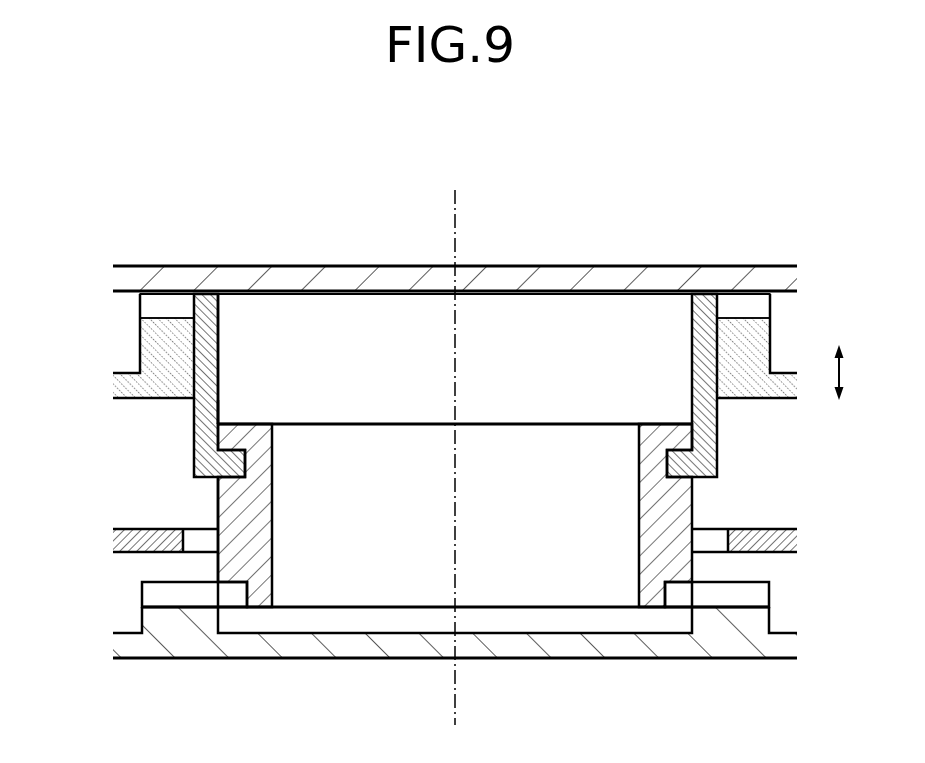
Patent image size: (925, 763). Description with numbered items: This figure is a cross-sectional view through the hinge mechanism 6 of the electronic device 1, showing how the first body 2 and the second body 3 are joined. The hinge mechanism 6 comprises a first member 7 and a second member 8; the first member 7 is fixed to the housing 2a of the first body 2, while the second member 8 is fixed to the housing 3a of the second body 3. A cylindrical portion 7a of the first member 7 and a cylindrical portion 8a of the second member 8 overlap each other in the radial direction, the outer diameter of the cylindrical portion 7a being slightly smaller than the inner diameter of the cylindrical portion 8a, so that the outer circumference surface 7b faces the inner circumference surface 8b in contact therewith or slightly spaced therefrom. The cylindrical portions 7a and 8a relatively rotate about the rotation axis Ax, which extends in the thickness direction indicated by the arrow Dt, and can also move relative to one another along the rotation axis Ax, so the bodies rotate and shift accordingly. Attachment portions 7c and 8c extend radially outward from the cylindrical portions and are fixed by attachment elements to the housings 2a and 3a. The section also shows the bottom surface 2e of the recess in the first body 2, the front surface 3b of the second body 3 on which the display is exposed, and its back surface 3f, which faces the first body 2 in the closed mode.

The electronic device 1 is at (313, 170).
The first body 2 is at (784, 671).
The housing 2a is at (737, 650).
The bottom surface 2e is at (125, 528).
The second body 3 is at (784, 257).
The housing 3a is at (759, 390).
The front surface 3b is at (622, 266).
The back surface 3f is at (135, 405).
The hinge mechanism 6 is at (783, 478).
The first member 7 is at (310, 620).
The cylindrical portion 7a is at (258, 530).
The outer circumference surface 7b is at (218, 505).
The attachment portion 7c is at (160, 590).
The second member 8 is at (250, 282).
The cylindrical portion 8a is at (218, 374).
The inner circumference surface 8b is at (218, 410).
The attachment portion 8c is at (160, 300).
The rotation axis Ax is at (460, 200).
The arrow Dt is at (856, 372).